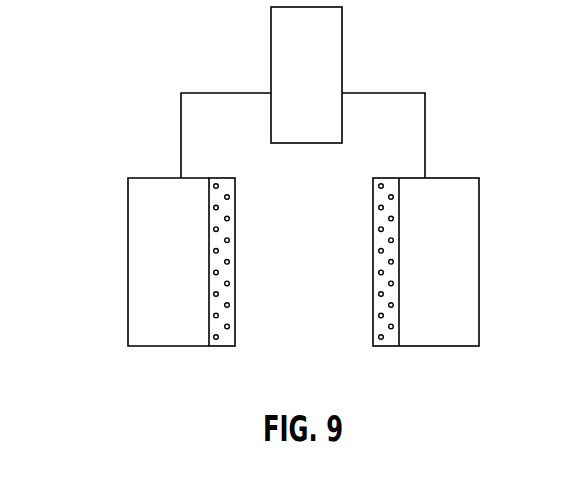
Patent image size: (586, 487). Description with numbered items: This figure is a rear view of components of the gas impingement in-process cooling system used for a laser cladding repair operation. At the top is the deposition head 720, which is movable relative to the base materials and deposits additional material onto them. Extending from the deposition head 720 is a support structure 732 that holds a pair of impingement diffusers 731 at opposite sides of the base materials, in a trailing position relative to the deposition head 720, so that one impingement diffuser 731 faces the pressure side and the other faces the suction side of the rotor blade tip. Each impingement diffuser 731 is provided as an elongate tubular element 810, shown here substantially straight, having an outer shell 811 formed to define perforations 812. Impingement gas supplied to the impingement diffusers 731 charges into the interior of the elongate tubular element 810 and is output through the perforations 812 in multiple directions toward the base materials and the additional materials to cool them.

The deposition head 720 is at (282, 32).
The support structure 732 is at (181, 136).
The impingement diffuser 731 is at (305, 281).
The elongate tubular element 810 is at (152, 293).
The outer shell 811 is at (197, 346).
The perforations 812 is at (227, 218).